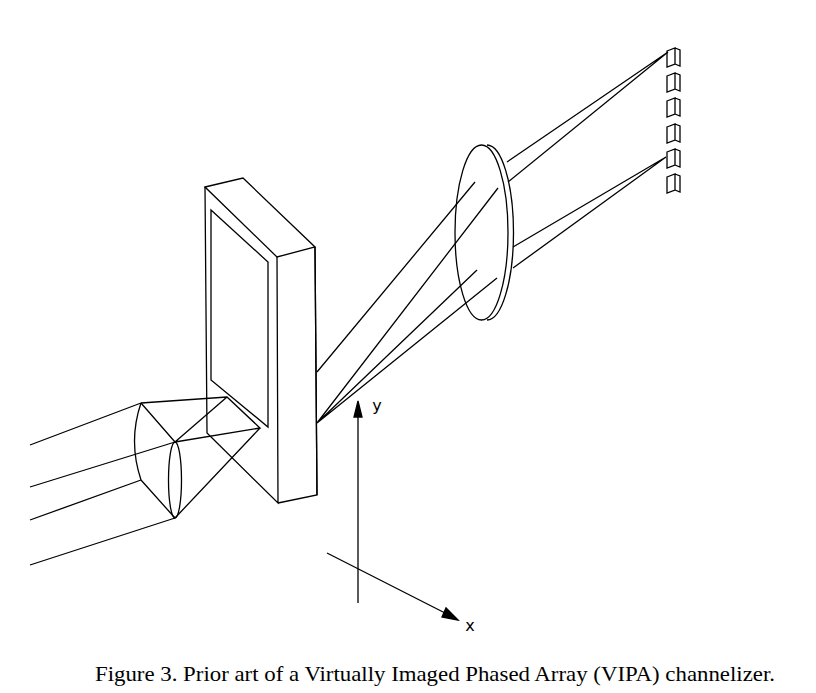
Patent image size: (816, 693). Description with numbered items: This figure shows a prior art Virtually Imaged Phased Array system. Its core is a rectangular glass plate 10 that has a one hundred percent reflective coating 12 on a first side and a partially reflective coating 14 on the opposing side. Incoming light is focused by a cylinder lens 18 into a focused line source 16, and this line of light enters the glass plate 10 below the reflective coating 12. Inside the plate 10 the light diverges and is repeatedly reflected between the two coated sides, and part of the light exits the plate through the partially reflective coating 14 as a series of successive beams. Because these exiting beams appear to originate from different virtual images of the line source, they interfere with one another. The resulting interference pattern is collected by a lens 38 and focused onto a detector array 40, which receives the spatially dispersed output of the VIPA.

The glass plate 10 is at (261, 328).
The 100% reflective coating 12 is at (239, 318).
The partially reflective coating 14 is at (318, 240).
The focused line source 16 is at (200, 457).
The cylinder lens 18 is at (152, 448).
The lens 38 is at (484, 223).
The detector array 40 is at (670, 110).